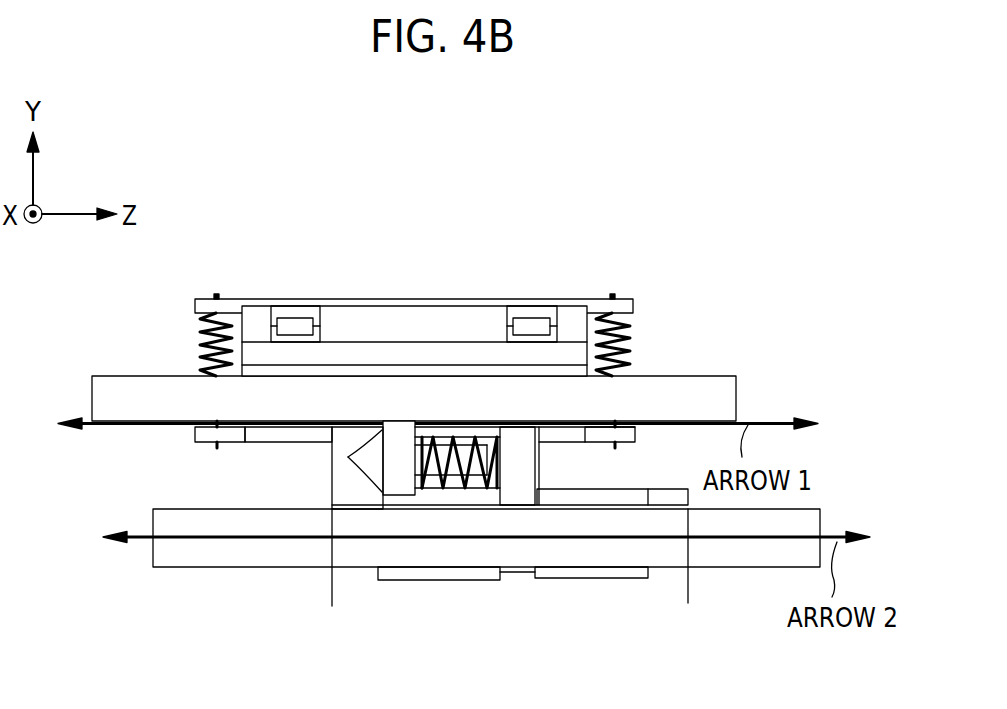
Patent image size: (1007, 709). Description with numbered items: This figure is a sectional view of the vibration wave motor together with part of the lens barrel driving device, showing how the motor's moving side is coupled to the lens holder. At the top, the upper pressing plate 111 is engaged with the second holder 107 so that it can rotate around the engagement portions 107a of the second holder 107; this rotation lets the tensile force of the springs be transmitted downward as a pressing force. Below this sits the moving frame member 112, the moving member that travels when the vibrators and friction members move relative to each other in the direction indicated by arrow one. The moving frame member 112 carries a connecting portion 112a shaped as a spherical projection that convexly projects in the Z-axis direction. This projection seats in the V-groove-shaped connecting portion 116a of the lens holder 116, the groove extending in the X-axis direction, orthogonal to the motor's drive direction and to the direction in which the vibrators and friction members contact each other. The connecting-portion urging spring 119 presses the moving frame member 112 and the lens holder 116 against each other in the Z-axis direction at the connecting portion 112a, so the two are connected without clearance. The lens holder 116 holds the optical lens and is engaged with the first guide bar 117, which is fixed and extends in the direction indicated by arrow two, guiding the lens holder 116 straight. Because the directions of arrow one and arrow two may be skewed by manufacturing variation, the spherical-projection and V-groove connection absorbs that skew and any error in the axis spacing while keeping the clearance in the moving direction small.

The second holder 107 is at (412, 316).
The engagement portions 107a is at (530, 313).
The upper pressing plate 111 is at (230, 308).
The moving frame member 112 is at (698, 375).
The connecting portion 112a is at (373, 467).
The lens holder 116 is at (347, 582).
The V-groove-shaped connecting portion 116a is at (348, 457).
The first guide bar 117 is at (733, 552).
The connecting-portion urging spring 119 is at (485, 488).